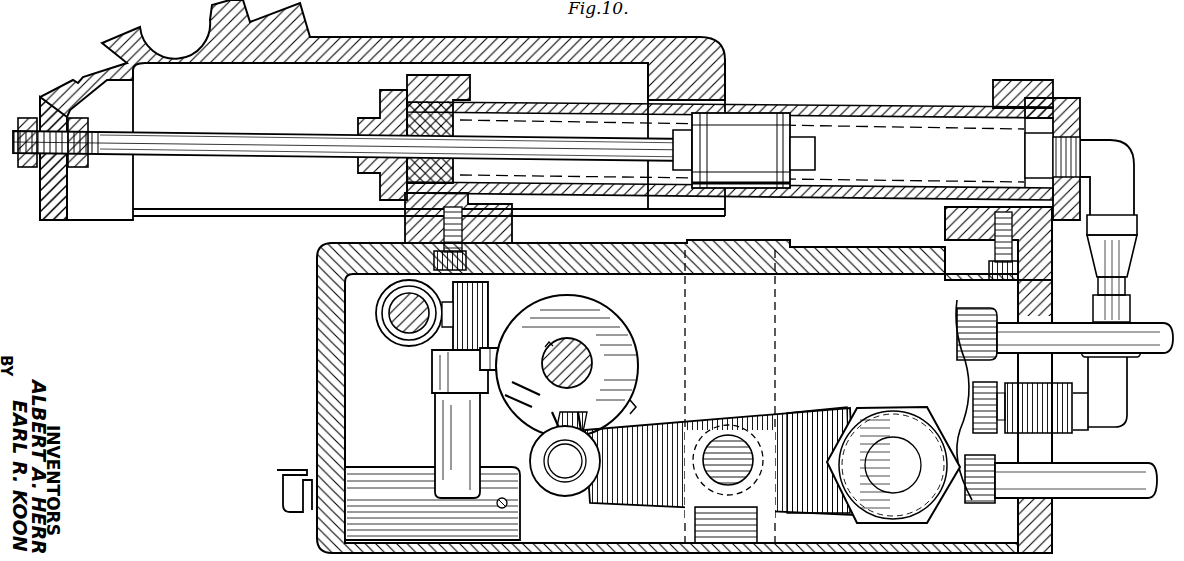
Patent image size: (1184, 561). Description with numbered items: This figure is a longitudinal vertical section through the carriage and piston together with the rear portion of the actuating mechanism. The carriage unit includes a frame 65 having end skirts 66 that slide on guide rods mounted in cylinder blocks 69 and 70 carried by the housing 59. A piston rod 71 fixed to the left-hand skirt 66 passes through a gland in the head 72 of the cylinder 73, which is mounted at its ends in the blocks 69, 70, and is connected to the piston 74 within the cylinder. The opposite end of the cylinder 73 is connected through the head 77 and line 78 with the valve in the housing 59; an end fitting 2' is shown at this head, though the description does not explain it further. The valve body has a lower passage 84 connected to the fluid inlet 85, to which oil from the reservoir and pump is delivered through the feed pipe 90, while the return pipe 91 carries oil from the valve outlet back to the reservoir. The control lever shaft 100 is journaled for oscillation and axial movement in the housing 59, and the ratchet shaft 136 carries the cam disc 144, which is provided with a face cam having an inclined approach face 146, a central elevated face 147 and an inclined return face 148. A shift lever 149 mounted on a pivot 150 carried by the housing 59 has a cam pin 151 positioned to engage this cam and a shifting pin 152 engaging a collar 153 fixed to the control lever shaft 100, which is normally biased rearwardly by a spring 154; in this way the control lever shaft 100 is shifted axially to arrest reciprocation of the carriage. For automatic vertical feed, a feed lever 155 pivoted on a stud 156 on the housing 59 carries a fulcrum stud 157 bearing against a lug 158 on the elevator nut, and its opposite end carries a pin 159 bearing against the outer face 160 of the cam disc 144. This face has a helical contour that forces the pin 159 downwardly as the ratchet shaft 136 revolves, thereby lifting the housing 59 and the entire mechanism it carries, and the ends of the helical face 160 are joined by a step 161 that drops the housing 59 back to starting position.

The frame 65 is at (470, 40).
The end skirts 66 is at (42, 200).
The cylinder block 69 is at (470, 90).
The head 72 is at (383, 95).
The piston rod 71 is at (275, 150).
The cylinder 73 is at (865, 106).
The piston 74 is at (770, 127).
The cylinder block 70 is at (993, 88).
The head 77 is at (1082, 116).
The end fitting 2' is at (1085, 85).
The line 78 is at (1128, 287).
The return pipe 91 is at (1165, 352).
The feed pipe 90 is at (1078, 482).
The housing 59 is at (327, 250).
The collar 153 is at (393, 298).
The spring 154 is at (390, 320).
The control lever shaft 100 is at (402, 340).
The shifting pin 152 is at (432, 355).
The cam pin 151 is at (490, 345).
The shift lever 149 is at (447, 430).
The pivot 150 is at (512, 504).
The outer face 160 is at (615, 315).
The cam disc 144 is at (630, 352).
The ratchet shaft 136 is at (572, 332).
The inclined approach face 146 is at (518, 405).
The central elevated face 147 is at (560, 404).
The step 161 is at (636, 408).
The inclined return face 148 is at (615, 440).
The pin 159 is at (600, 465).
The fulcrum stud 157 is at (735, 440).
The feed lever 155 is at (805, 430).
The lug 158 is at (760, 516).
The stud 156 is at (870, 521).
The lower passage 84 is at (848, 8).
The fluid inlet 85 is at (942, 8).